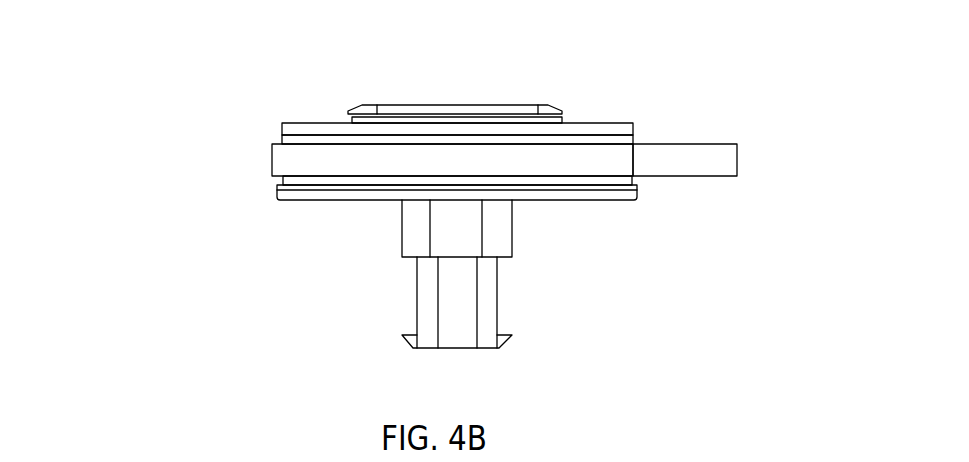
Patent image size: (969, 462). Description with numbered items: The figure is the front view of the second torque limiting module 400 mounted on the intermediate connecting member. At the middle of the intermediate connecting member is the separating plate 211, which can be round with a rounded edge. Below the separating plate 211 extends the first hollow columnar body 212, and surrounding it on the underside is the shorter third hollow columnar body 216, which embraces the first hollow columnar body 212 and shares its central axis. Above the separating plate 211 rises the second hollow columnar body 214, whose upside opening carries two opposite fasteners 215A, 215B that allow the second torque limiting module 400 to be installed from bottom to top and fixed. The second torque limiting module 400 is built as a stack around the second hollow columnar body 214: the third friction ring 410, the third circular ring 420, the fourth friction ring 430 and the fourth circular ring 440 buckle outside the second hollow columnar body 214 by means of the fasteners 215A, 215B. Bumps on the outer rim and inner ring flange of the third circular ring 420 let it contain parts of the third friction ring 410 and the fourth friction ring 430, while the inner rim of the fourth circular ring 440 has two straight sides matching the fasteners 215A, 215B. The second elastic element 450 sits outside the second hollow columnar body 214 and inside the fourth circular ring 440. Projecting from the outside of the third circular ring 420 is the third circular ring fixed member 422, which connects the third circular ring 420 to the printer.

The second torque limiting module 400 is at (206, 51).
The second hollow columnar body 214 is at (410, 104).
The fastener 215A is at (549, 104).
The fastener 215B is at (359, 104).
The second elastic element 450 is at (558, 120).
The fourth circular ring 440 is at (633, 123).
The fourth friction ring 430 is at (272, 145).
The third circular ring 420 is at (272, 163).
The third circular ring fixed member 422 is at (738, 176).
The third friction ring 410 is at (275, 185).
The separating plate 211 is at (637, 197).
The third hollow columnar body 216 is at (512, 214).
The first hollow columnar body 212 is at (417, 283).